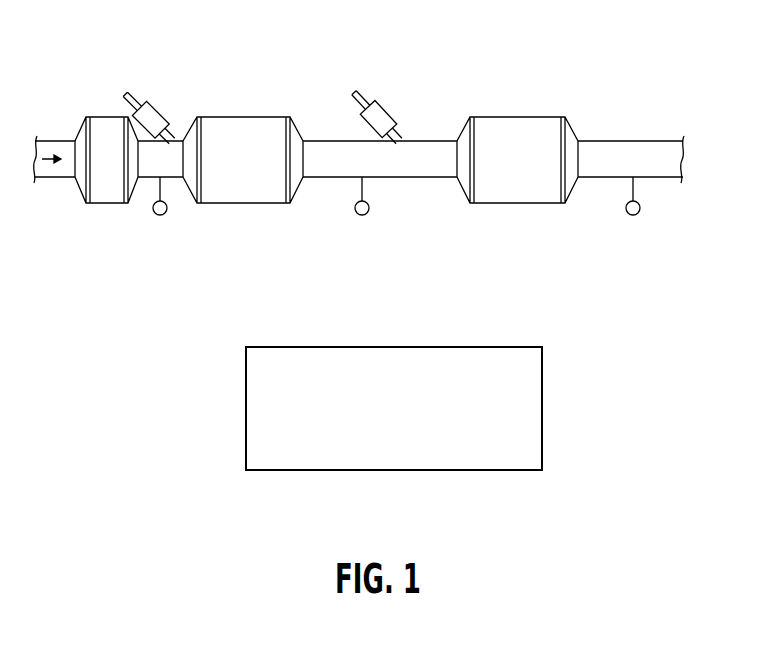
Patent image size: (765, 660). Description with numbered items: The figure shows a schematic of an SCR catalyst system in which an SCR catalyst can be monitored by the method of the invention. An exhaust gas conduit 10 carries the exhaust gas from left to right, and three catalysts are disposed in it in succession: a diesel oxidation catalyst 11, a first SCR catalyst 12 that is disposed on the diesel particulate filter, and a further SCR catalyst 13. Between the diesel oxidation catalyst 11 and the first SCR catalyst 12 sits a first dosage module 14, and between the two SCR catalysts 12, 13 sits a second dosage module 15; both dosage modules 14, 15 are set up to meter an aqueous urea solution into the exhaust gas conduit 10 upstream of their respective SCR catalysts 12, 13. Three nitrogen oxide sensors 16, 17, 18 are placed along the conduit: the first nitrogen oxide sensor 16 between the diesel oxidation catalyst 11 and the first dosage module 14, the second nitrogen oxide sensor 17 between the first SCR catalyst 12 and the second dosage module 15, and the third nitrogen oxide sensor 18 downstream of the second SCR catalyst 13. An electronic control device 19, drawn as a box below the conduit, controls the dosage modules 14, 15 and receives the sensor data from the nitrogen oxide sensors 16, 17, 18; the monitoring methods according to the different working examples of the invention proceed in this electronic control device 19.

The exhaust gas conduit 10 is at (53, 147).
The diesel oxidation catalyst 11 is at (105, 125).
The SCR catalyst 12 is at (268, 125).
The further SCR catalyst 13 is at (522, 125).
The first dosage module 14 is at (150, 115).
The second dosage module 15 is at (383, 112).
The nitrogen oxide sensor 16 is at (158, 217).
The nitrogen oxide sensor 17 is at (356, 217).
The nitrogen oxide sensor 18 is at (627, 217).
The electronic control device 19 is at (532, 417).